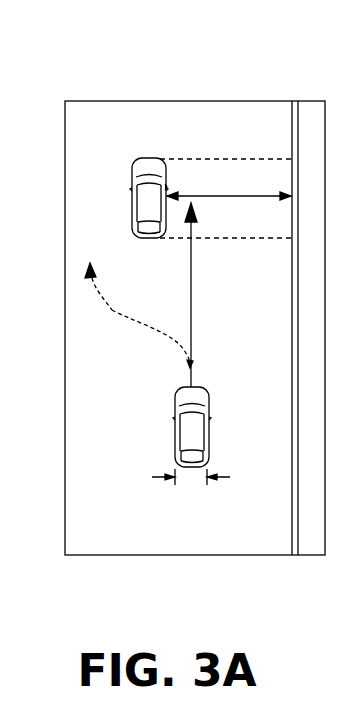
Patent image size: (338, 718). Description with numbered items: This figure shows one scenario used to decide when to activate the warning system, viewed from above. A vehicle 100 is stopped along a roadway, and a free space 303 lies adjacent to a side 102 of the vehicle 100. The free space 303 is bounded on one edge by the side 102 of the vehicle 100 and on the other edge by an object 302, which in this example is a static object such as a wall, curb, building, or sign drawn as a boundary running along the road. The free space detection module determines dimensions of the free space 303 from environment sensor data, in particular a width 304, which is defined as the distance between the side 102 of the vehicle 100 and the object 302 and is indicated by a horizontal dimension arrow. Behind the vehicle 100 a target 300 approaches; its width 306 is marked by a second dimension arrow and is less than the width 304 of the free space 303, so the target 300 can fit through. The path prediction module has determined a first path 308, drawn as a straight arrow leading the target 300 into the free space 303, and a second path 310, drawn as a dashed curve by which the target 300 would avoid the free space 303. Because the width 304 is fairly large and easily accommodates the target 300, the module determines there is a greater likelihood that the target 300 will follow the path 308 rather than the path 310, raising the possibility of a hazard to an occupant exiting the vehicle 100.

The vehicle 100 is at (150, 157).
The side of the vehicle 102 is at (166, 186).
The target 300 is at (178, 427).
The object 302 is at (292, 140).
The free space 303 is at (248, 170).
The width of the free space 304 is at (222, 195).
The width of the target 306 is at (155, 480).
The first path 308 is at (191, 302).
The second path 310 is at (112, 310).